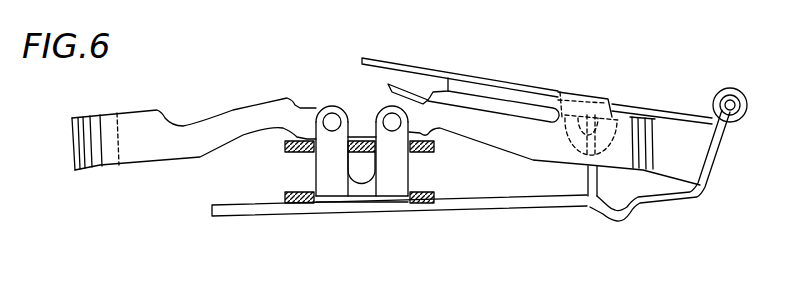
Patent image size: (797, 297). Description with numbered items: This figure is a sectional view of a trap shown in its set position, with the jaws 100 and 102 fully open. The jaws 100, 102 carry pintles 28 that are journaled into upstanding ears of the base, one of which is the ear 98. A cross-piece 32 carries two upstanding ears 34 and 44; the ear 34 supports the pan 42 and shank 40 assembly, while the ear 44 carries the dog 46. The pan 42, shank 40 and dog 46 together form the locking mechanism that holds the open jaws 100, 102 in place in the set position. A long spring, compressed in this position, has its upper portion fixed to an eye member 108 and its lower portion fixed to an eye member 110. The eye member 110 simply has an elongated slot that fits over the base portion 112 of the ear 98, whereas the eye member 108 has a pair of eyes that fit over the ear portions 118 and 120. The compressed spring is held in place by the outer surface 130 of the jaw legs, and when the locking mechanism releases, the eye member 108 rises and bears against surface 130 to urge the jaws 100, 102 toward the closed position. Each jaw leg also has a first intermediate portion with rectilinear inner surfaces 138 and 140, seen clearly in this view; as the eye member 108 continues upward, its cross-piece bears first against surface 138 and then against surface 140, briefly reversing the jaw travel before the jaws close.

The pintle 28 is at (331, 113).
The cross-piece 32 is at (527, 207).
The upstanding ear 34 is at (588, 195).
The shank 40 is at (581, 92).
The pan 42 is at (413, 65).
The upstanding ear 44 is at (708, 163).
The dog 46 is at (706, 112).
The upstanding ear 98 is at (362, 188).
The jaw 100 is at (638, 148).
The jaw 102 is at (77, 152).
The eye member 108 is at (434, 147).
The eye member 110 is at (450, 203).
The base portion 112 is at (390, 188).
The ear portion 118 is at (328, 148).
The ear portion 120 is at (393, 150).
The outer surface 130 is at (308, 139).
The inner surface 138 is at (388, 85).
The inner surface 140 is at (448, 78).